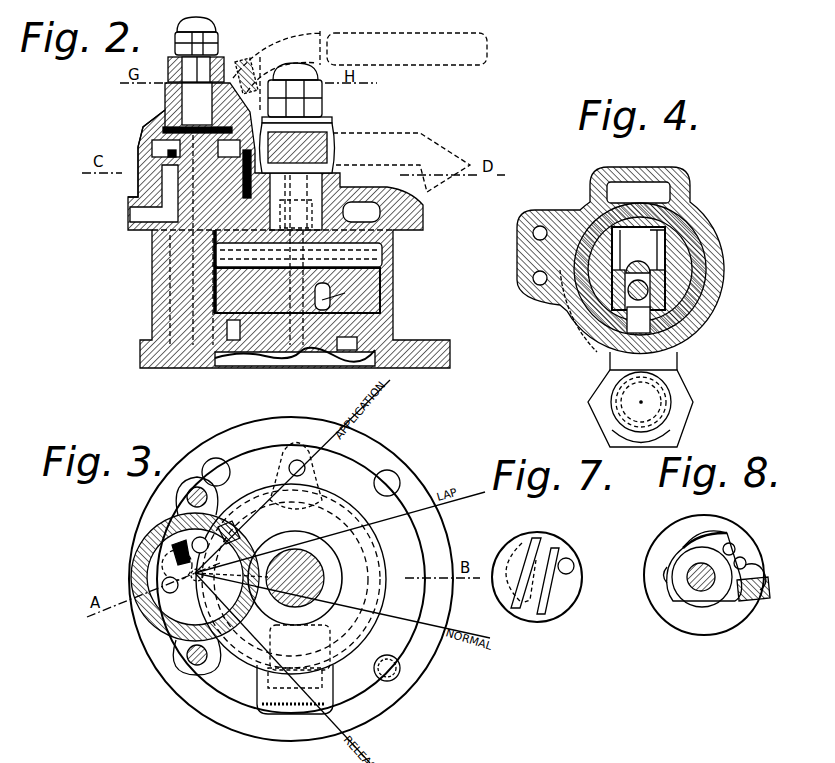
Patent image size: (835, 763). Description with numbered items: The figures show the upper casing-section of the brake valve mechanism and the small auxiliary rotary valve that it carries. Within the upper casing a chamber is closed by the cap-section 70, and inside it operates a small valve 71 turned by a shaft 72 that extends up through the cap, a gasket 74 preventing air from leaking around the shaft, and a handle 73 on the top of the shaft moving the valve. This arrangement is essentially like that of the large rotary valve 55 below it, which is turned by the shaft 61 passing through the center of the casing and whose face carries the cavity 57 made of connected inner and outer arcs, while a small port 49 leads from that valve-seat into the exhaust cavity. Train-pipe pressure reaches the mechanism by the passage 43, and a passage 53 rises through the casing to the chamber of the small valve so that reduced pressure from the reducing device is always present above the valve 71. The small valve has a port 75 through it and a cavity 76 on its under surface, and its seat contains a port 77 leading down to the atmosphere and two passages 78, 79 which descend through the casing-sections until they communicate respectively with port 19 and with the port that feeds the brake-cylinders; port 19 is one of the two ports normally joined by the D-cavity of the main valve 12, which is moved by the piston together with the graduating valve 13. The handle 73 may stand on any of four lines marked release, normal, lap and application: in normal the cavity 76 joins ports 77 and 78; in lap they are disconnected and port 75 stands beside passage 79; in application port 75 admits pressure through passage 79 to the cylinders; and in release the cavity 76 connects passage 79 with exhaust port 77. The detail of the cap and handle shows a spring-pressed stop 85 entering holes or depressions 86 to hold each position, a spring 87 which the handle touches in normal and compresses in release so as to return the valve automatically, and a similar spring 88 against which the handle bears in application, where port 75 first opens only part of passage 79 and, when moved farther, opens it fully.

In FIG. 2, the shaft 72 is at (197, 104).
In FIG. 2, the cap-section 70 is at (150, 140).
In FIG. 8, the cap-section 70 is at (691, 577).
In FIG. 2, the gasket 74 is at (160, 128).
In FIG. 2, the small valve 71 is at (140, 157).
In FIG. 7, the small valve 71 is at (537, 577).
In FIG. 2, the cavity 76 is at (140, 178).
In FIG. 7, the cavity 76 is at (503, 560).
In FIG. 2, the port 77 is at (138, 212).
In FIG. 3, the port 77 is at (147, 612).
In FIG. 2, the rotary valve 55 is at (390, 263).
In FIG. 2, the cavity 57 is at (390, 290).
In FIG. 2, the small port 49 is at (240, 362).
In FIG. 3, the small port 49 is at (295, 578).
In FIG. 2, the passage 78 is at (171, 370).
In FIG. 4, the passage 78 is at (546, 294).
In FIG. 3, the passage 78 is at (145, 533).
In FIG. 2, the passage 79 is at (203, 370).
In FIG. 4, the passage 79 is at (552, 215).
In FIG. 3, the passage 79 is at (155, 530).
In FIG. 2, the shaft 61 is at (297, 129).
In FIG. 2, the handle 73 is at (360, 61).
In FIG. 8, the handle 73 is at (757, 601).
In FIG. 2, the port 75 is at (242, 102).
In FIG. 7, the port 75 is at (572, 561).
In FIG. 4, the passage 43 is at (640, 260).
In FIG. 4, the main valve 12 is at (649, 268).
In FIG. 4, the graduating valve 13 is at (638, 312).
In FIG. 4, the port 19 is at (600, 365).
In FIG. 3, the passage 53 is at (233, 515).
In FIG. 8, the spring 87 is at (698, 607).
In FIG. 8, the spring 88 is at (683, 547).
In FIG. 8, the holes or depressions 86 is at (729, 543).
In FIG. 8, the spring-pressed stop 85 is at (757, 567).